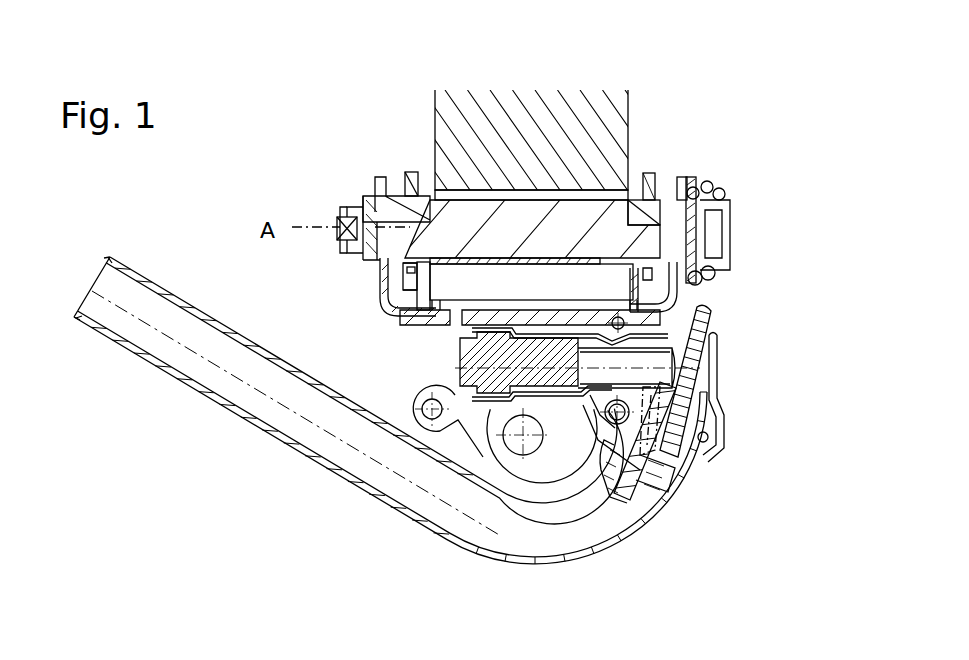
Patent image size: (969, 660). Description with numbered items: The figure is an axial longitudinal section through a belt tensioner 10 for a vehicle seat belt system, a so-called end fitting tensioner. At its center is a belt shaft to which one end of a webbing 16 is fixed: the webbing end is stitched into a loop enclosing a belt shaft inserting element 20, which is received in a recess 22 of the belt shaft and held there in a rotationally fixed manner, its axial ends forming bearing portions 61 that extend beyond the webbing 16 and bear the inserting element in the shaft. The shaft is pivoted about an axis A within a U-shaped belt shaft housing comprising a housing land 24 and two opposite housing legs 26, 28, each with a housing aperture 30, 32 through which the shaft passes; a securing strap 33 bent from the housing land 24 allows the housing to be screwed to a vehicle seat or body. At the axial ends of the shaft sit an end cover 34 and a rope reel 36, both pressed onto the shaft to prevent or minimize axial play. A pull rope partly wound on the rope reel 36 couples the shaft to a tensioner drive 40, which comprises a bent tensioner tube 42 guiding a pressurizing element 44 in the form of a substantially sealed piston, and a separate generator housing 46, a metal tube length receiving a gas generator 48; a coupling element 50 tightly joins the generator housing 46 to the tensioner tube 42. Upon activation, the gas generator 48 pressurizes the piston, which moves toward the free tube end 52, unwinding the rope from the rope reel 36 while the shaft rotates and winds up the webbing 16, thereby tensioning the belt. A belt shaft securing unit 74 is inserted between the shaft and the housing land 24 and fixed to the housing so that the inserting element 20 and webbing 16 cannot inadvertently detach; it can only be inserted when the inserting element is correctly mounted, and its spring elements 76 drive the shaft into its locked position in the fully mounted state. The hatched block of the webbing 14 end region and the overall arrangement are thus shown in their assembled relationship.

The belt tensioner 10 is at (262, 510).
The end of the webbing 14 is at (466, 168).
The webbing 16 is at (542, 128).
The belt shaft inserting element 20 is at (560, 243).
The recess 22 is at (634, 180).
The housing land 24 is at (470, 314).
The housing leg 26 is at (412, 172).
The housing leg 28 is at (655, 178).
The housing aperture 30 is at (404, 212).
The housing aperture 32 is at (665, 225).
The securing strap 33 is at (543, 465).
The end cover 34 is at (382, 194).
The rope reel 36 is at (712, 265).
The tensioner drive 40 is at (668, 535).
The tensioner tube 42 is at (215, 398).
The pressurizing element 44 is at (655, 488).
The generator housing 46 is at (503, 400).
The gas generator 48 is at (490, 378).
The coupling element 50 is at (697, 375).
The free tube end 52 is at (82, 278).
The bearing portions 61 is at (395, 248).
The belt shaft securing unit 74 is at (440, 310).
The spring elements 76 is at (392, 284).